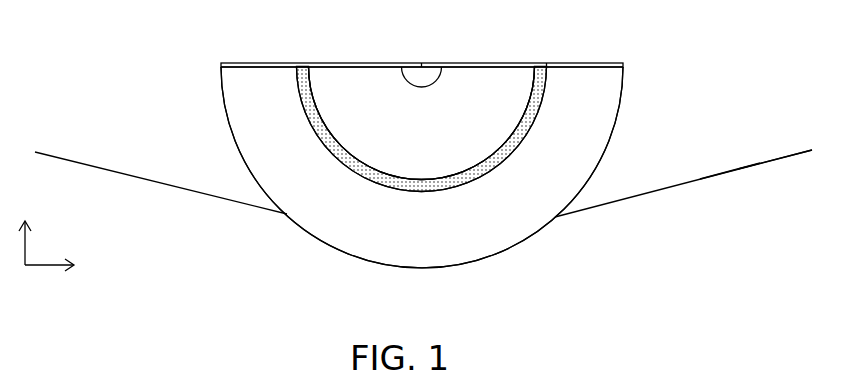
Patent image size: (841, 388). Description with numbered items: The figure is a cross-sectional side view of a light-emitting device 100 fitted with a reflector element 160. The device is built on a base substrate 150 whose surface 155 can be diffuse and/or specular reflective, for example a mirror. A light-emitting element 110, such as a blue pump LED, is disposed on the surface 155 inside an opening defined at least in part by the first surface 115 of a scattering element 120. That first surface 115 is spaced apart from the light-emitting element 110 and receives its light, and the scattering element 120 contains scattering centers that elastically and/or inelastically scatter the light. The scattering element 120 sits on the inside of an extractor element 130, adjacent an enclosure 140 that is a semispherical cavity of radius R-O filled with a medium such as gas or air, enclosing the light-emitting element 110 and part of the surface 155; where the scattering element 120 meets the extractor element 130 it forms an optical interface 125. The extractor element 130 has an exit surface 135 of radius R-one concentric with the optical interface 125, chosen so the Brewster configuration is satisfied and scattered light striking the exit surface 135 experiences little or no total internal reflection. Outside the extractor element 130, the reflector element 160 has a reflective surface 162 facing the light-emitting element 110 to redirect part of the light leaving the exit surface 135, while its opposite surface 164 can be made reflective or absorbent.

The light-emitting device 100 is at (62, 24).
The light-emitting element 110 is at (432, 78).
The first surface 115 is at (480, 162).
The scattering element 120 is at (357, 175).
The optical interface 125 is at (517, 146).
The extractor element 130 is at (519, 215).
The exit surface 135 is at (313, 234).
The enclosure 140 is at (345, 125).
The base substrate 150 is at (274, 63).
The surface 155 is at (240, 68).
The reflector element 160 is at (673, 187).
The reflective surface 162 is at (738, 168).
The surface 164 is at (743, 169).